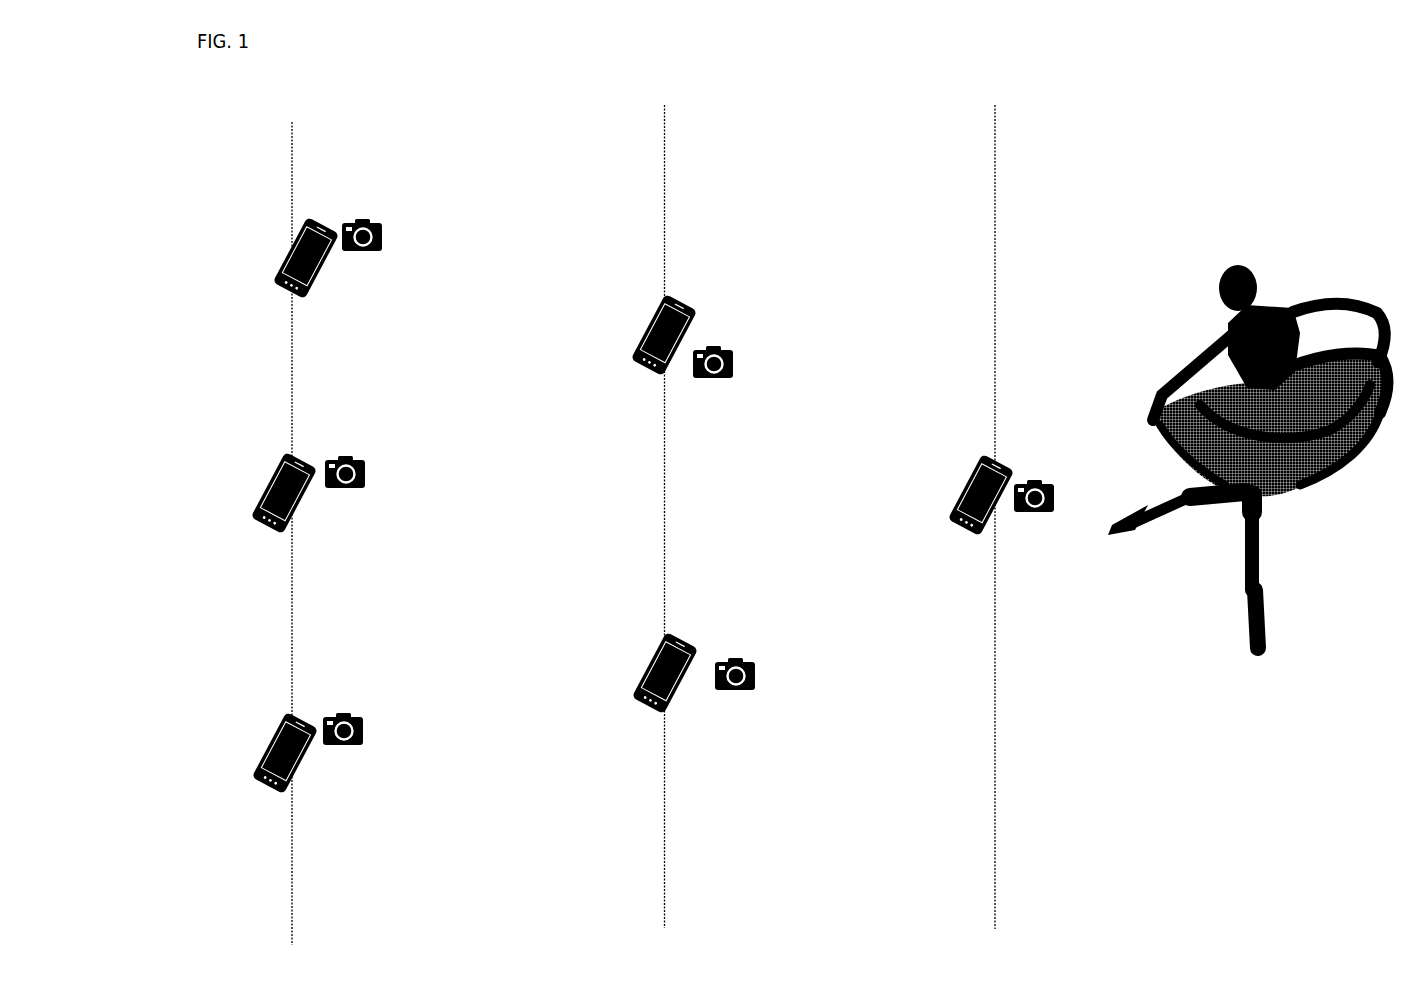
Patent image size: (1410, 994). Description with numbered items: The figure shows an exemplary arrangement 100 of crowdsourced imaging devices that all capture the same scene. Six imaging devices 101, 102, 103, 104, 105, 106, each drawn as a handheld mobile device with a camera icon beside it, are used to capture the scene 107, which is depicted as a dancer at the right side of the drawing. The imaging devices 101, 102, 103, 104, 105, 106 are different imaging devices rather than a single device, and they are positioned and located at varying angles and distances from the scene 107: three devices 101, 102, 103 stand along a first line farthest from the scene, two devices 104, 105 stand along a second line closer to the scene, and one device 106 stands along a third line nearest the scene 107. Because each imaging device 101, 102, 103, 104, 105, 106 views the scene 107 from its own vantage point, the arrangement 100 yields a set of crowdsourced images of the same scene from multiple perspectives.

The arrangement 100 is at (386, 50).
The imaging device 101 is at (283, 257).
The imaging device 102 is at (260, 500).
The imaging device 103 is at (260, 765).
The imaging device 104 is at (637, 342).
The imaging device 105 is at (645, 668).
The imaging device 106 is at (957, 500).
The scene 107 is at (1236, 263).